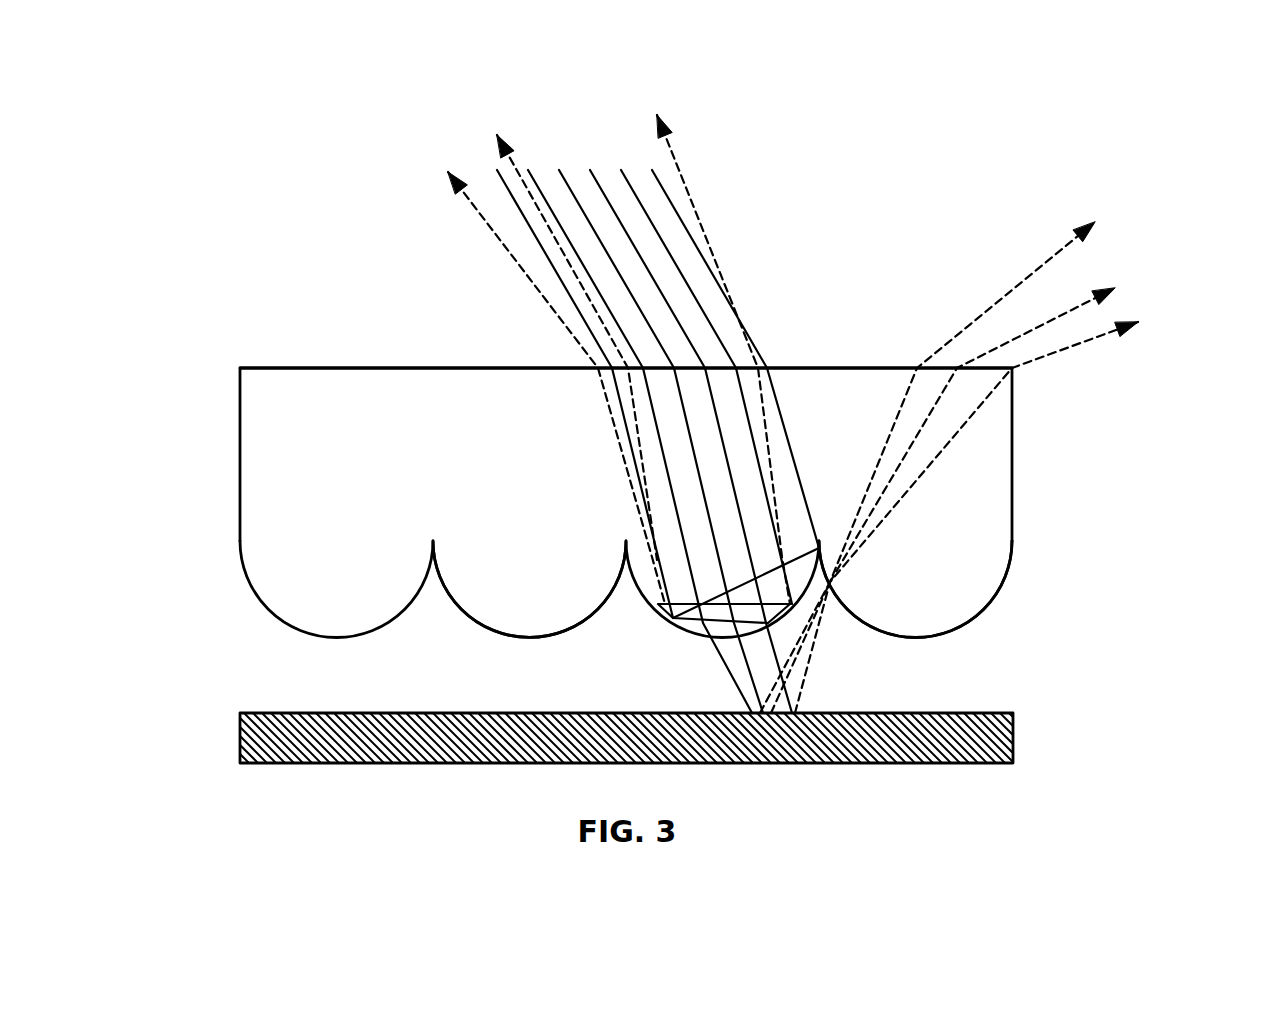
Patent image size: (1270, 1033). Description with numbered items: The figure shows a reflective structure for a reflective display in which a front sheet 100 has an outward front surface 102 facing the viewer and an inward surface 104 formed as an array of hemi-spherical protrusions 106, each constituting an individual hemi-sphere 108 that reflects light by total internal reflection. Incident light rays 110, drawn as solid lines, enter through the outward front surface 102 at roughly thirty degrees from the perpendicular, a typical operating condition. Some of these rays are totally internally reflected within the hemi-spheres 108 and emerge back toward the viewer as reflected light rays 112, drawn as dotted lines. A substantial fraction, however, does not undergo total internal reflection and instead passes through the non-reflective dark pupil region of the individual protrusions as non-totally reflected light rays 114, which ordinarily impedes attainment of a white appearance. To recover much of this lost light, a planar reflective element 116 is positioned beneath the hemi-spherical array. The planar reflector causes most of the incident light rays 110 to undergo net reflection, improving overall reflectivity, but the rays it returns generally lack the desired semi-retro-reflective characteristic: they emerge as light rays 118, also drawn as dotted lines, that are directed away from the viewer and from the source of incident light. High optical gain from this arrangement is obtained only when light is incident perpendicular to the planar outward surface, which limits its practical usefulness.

The front sheet 100 is at (462, 462).
The outward front surface 102 is at (839, 368).
The inward surface 104 is at (263, 603).
The hemi-spherical protrusions 106 is at (1028, 540).
The hemi-spheres 108 is at (367, 567).
The incident light rays 110 is at (570, 190).
The reflected light rays 112 is at (495, 237).
The non-totally reflected light rays 114 is at (682, 627).
The planar reflective element 116 is at (1013, 738).
The light rays reflected away from the viewer 118 is at (1003, 449).